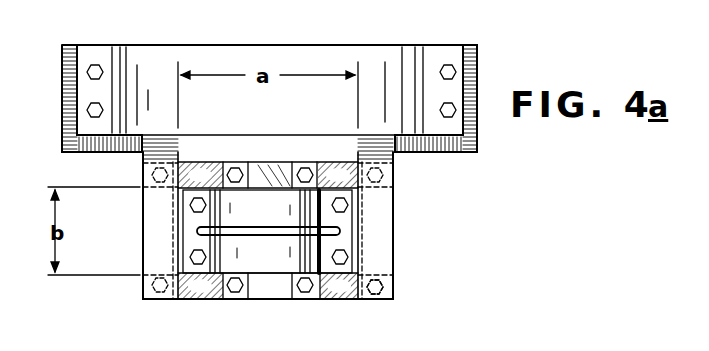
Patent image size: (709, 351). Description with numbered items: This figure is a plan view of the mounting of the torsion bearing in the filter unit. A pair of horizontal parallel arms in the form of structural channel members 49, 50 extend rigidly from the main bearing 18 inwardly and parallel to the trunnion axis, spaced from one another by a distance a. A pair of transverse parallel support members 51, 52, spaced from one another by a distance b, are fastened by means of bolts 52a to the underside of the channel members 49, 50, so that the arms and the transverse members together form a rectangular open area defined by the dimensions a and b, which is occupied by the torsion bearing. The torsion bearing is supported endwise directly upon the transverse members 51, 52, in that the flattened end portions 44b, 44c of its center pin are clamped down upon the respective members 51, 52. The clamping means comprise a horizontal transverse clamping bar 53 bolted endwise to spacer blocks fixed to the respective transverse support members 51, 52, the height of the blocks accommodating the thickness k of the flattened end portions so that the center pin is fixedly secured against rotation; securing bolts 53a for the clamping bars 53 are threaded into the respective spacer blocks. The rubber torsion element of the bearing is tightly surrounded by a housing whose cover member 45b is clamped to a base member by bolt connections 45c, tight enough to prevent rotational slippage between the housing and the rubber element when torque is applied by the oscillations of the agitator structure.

The main bearing 18 is at (350, 52).
The channel member 49 is at (148, 202).
The channel member 50 is at (388, 200).
The transverse support member 51 is at (338, 170).
The transverse support member 52 is at (337, 292).
The bolts 52a is at (393, 283).
The clamping bar 53 is at (257, 292).
The securing bolts 53a is at (318, 326).
The flattened end portion 44b is at (286, 286).
The flattened end portion 44c is at (288, 178).
The cover member 45b is at (345, 220).
The bolt connections 45c is at (350, 257).